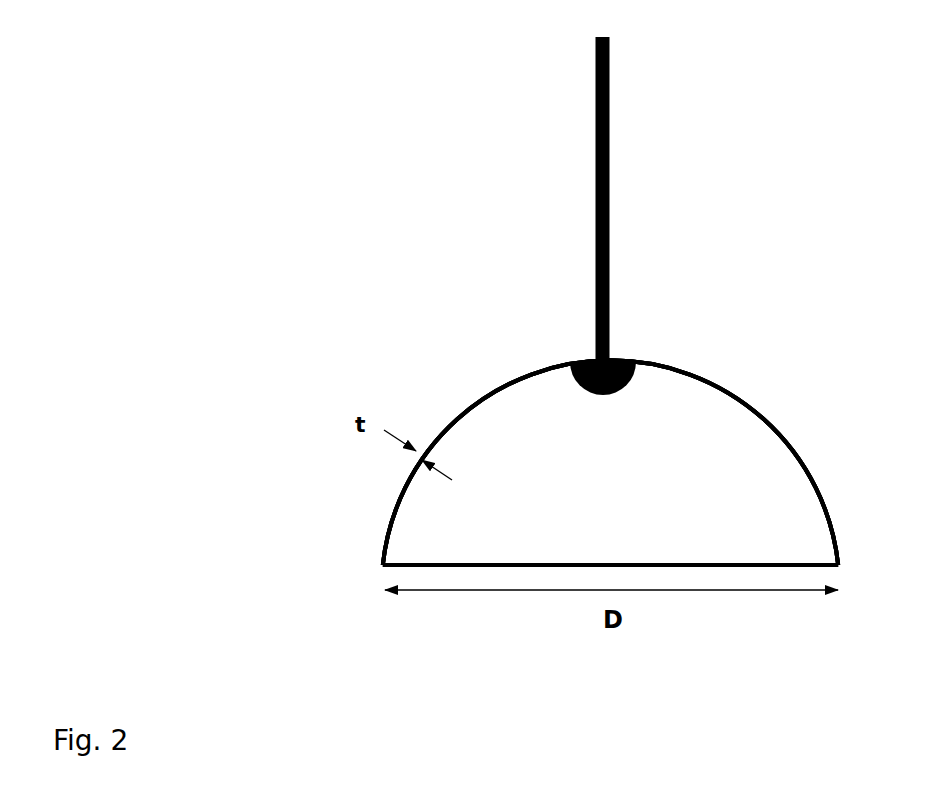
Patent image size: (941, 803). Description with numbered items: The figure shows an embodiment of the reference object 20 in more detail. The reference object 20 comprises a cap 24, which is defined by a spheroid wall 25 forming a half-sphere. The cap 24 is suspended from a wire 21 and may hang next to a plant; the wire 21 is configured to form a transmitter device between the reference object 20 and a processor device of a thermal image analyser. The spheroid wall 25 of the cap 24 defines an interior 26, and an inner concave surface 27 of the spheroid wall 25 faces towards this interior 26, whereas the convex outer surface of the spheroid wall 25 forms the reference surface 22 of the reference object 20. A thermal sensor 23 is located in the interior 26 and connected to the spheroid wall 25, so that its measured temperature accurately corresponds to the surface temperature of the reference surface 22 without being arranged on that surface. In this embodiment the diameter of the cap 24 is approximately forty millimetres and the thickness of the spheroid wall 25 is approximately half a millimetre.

The reference object 20 is at (654, 288).
The wire 21 is at (594, 93).
The reference surface 22 is at (831, 490).
The thermal sensor 23 is at (623, 388).
The cap 24 is at (704, 348).
The spheroid wall 25 is at (528, 363).
The interior 26 is at (597, 498).
The inner concave surface 27 is at (776, 428).